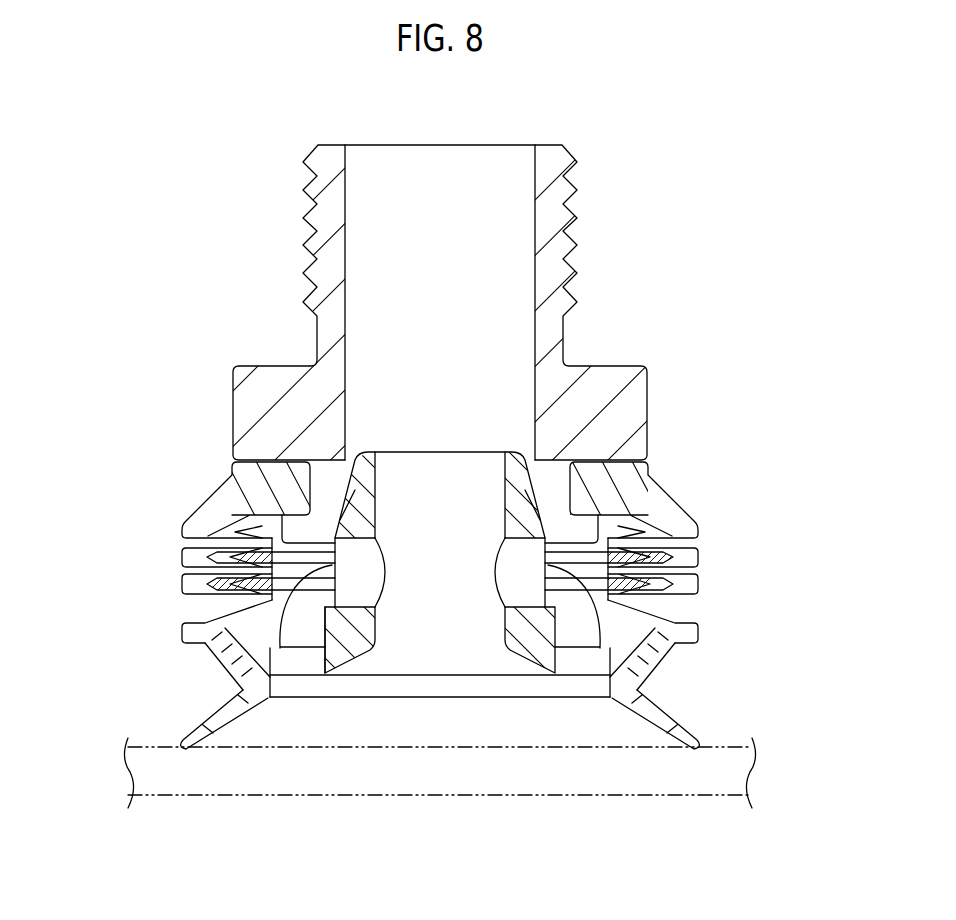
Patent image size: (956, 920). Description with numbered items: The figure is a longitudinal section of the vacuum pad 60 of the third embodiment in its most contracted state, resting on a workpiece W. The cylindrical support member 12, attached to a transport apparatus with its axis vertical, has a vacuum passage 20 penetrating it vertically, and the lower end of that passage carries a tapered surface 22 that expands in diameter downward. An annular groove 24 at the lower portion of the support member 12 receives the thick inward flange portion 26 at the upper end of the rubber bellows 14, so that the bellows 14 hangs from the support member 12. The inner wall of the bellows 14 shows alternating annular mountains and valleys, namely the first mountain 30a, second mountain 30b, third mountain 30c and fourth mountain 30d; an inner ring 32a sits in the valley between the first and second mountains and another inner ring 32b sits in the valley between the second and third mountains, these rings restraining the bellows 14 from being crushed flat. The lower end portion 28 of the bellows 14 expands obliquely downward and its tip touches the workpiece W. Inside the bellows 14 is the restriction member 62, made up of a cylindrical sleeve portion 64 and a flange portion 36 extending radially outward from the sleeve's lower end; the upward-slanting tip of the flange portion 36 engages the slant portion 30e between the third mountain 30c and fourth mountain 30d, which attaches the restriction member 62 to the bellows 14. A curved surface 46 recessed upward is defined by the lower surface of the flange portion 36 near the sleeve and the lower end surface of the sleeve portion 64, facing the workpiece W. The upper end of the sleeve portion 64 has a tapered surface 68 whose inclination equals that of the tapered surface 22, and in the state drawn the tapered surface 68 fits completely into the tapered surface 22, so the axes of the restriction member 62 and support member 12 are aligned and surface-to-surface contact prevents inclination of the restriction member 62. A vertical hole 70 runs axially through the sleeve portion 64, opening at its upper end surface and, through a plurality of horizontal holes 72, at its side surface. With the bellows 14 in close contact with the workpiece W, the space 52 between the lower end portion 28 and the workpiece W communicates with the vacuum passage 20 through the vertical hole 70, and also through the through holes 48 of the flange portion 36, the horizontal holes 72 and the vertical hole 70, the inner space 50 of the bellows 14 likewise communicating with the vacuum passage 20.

The vacuum pad 60 is at (224, 132).
The support member 12 is at (478, 460).
The vacuum passage 20 is at (445, 155).
The restriction member 62 is at (418, 450).
The vertical hole 70 is at (458, 470).
The tapered surface 22 is at (353, 505).
The tapered surface 68 is at (540, 490).
The horizontal holes 72 is at (363, 567).
The bellows 14 is at (453, 460).
The annular groove 24 is at (290, 492).
The inward flange portion 26 is at (613, 490).
The first mountain 30a is at (260, 540).
The second mountain 30b is at (262, 568).
The third mountain 30c is at (260, 603).
The fourth mountain 30d is at (258, 683).
The slant portion 30e is at (653, 653).
The inner ring 32a is at (687, 547).
The inner ring 32b is at (697, 581).
The flange portion 36 is at (653, 637).
The inner space 50 is at (232, 662).
The sleeve portion 64 is at (548, 568).
The curved surface 46 is at (338, 655).
The through holes 48 is at (582, 655).
The space 52 is at (302, 730).
The lower end portion 28 is at (675, 723).
The workpiece W is at (440, 770).